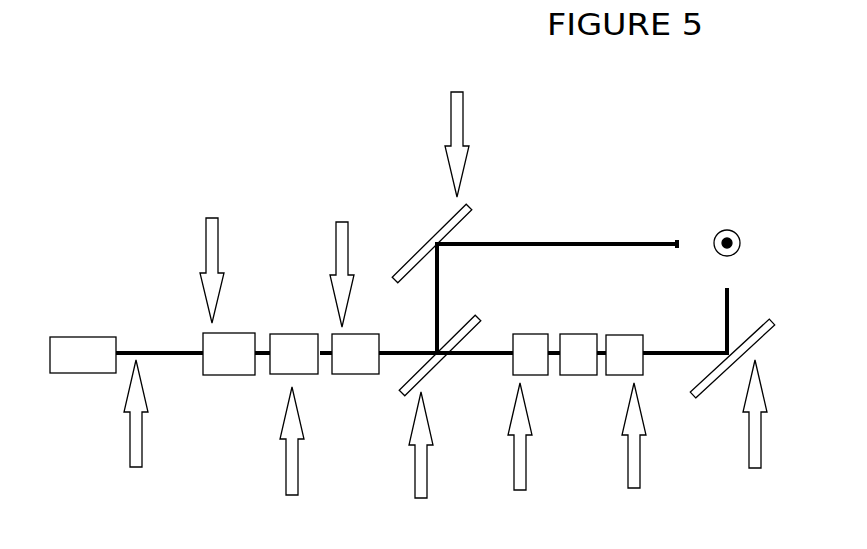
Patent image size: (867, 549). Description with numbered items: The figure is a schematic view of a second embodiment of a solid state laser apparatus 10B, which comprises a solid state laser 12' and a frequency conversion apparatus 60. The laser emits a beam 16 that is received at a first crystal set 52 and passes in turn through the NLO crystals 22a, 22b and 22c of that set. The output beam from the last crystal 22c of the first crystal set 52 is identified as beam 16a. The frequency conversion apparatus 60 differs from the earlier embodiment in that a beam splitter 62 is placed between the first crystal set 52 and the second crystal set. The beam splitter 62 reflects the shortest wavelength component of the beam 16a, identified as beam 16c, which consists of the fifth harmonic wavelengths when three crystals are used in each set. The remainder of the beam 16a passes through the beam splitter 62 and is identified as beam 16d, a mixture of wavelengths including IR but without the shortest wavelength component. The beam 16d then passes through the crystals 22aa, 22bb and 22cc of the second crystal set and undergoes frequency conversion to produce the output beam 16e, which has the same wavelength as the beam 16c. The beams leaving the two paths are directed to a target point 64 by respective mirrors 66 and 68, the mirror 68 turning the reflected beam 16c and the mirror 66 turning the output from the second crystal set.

The solid state laser apparatus 10B is at (243, 83).
The solid state laser 12' is at (83, 281).
The beam 16 is at (138, 437).
The output beam 16a is at (401, 346).
The beam 16c is at (598, 238).
The beam 16d is at (476, 368).
The output beam 16e is at (680, 348).
The NLO crystal 22a is at (226, 277).
The NLO crystal 22b is at (296, 440).
The NLO crystal 22c is at (356, 277).
The NLO crystal 22aa is at (510, 437).
The NLO crystal 22bb is at (585, 332).
The NLO crystal 22cc is at (644, 434).
The first crystal set 52 is at (292, 196).
The frequency conversion apparatus 60 is at (584, 134).
The beam splitter 62 is at (435, 427).
The target point 64 is at (738, 227).
The mirror 66 is at (735, 412).
The mirror 68 is at (438, 167).